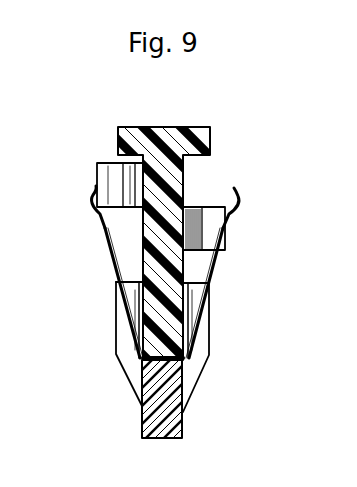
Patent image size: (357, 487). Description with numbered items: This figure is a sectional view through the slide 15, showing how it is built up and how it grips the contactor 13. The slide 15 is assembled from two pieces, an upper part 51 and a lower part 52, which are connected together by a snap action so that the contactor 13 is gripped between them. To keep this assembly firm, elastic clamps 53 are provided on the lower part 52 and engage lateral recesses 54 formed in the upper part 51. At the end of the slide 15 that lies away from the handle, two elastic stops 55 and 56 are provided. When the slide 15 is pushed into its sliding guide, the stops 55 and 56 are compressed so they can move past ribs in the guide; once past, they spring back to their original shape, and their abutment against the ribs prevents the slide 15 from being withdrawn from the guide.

The contactor 13 is at (197, 270).
The slide 15 is at (220, 345).
The upper part 51 is at (150, 266).
The lower part 52 is at (167, 395).
The elastic clamps 53 is at (117, 328).
The lateral recesses 54 is at (137, 277).
The elastic stop 55 is at (110, 173).
The elastic stop 56 is at (212, 208).